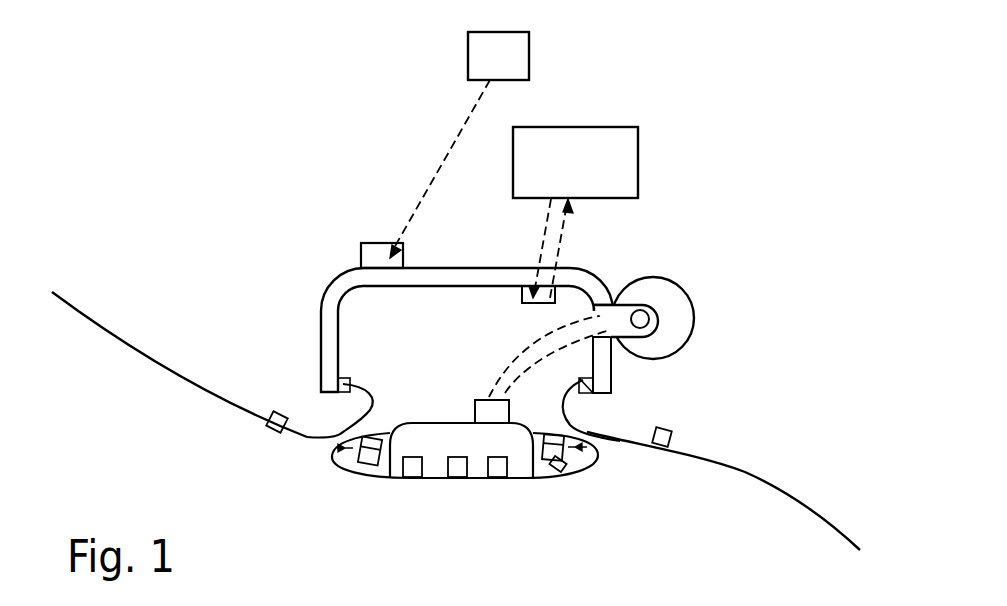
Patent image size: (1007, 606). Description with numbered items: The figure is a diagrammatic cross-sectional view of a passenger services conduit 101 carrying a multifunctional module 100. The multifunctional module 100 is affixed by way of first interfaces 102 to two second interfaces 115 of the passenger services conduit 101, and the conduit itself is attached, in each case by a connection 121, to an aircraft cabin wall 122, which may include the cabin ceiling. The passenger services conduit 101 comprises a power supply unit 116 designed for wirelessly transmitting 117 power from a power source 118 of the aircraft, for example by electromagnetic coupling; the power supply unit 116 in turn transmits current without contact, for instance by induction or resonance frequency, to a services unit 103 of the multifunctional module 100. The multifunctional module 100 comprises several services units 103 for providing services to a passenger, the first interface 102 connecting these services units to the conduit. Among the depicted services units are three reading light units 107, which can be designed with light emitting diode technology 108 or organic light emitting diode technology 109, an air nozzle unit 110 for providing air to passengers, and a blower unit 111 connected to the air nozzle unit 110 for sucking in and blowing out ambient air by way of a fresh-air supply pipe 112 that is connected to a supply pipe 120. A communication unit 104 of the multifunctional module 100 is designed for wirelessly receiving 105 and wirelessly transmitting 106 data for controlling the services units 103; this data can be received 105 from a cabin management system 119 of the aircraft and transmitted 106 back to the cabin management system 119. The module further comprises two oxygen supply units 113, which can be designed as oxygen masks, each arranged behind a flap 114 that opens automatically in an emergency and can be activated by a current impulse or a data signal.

The multifunctional module 100 is at (542, 480).
The passenger services conduit 101 is at (322, 290).
The first interface 102 is at (337, 375).
The services unit 103 is at (360, 466).
The communication unit 104 is at (556, 298).
The wireless receiving 105 is at (538, 250).
The wireless transmitting 106 is at (562, 238).
The reading light unit 107 is at (406, 458).
The light emitting diode (LED) technology 108 is at (420, 456).
The organic light emitting diode (OLED) technology 109 is at (570, 435).
The air nozzle unit 110 is at (526, 479).
The blower unit 111 is at (509, 411).
The fresh-air supply pipe 112 is at (522, 347).
The oxygen supply unit 113 is at (345, 448).
The flap 114 is at (370, 470).
The second interface 115 is at (338, 390).
The power supply unit 116 is at (378, 258).
The wireless transmitting of power 117 is at (447, 155).
The power source 118 is at (505, 55).
The cabin management system 119 is at (620, 163).
The supply pipe 120 is at (677, 315).
The connection 121 is at (268, 416).
The aircraft cabin wall 122 is at (120, 342).